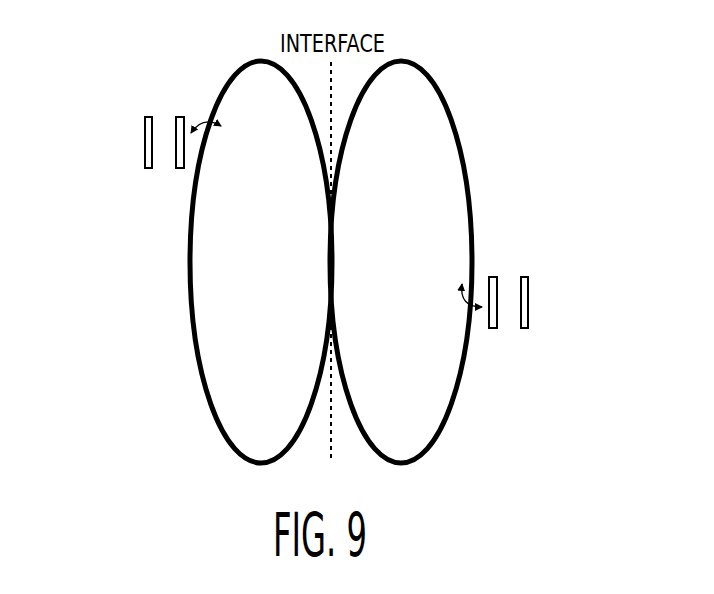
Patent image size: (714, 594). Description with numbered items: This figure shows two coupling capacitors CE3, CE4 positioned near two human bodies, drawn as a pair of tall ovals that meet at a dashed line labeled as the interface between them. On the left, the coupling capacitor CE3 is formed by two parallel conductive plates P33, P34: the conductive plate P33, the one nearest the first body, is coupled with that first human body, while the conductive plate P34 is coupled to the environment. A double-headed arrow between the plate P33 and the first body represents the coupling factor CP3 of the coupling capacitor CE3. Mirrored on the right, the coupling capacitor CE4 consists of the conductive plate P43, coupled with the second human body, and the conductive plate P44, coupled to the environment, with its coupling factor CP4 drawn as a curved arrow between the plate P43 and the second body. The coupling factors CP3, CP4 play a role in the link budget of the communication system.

The coupling capacitor CE3 is at (118, 115).
The conductive plate P33 is at (178, 111).
The conductive plate P34 is at (143, 122).
The coupling factor CP3 is at (226, 140).
The coupling capacitor CE4 is at (543, 257).
The conductive plate P43 is at (494, 272).
The conductive plate P44 is at (527, 272).
The coupling factor CP4 is at (451, 308).